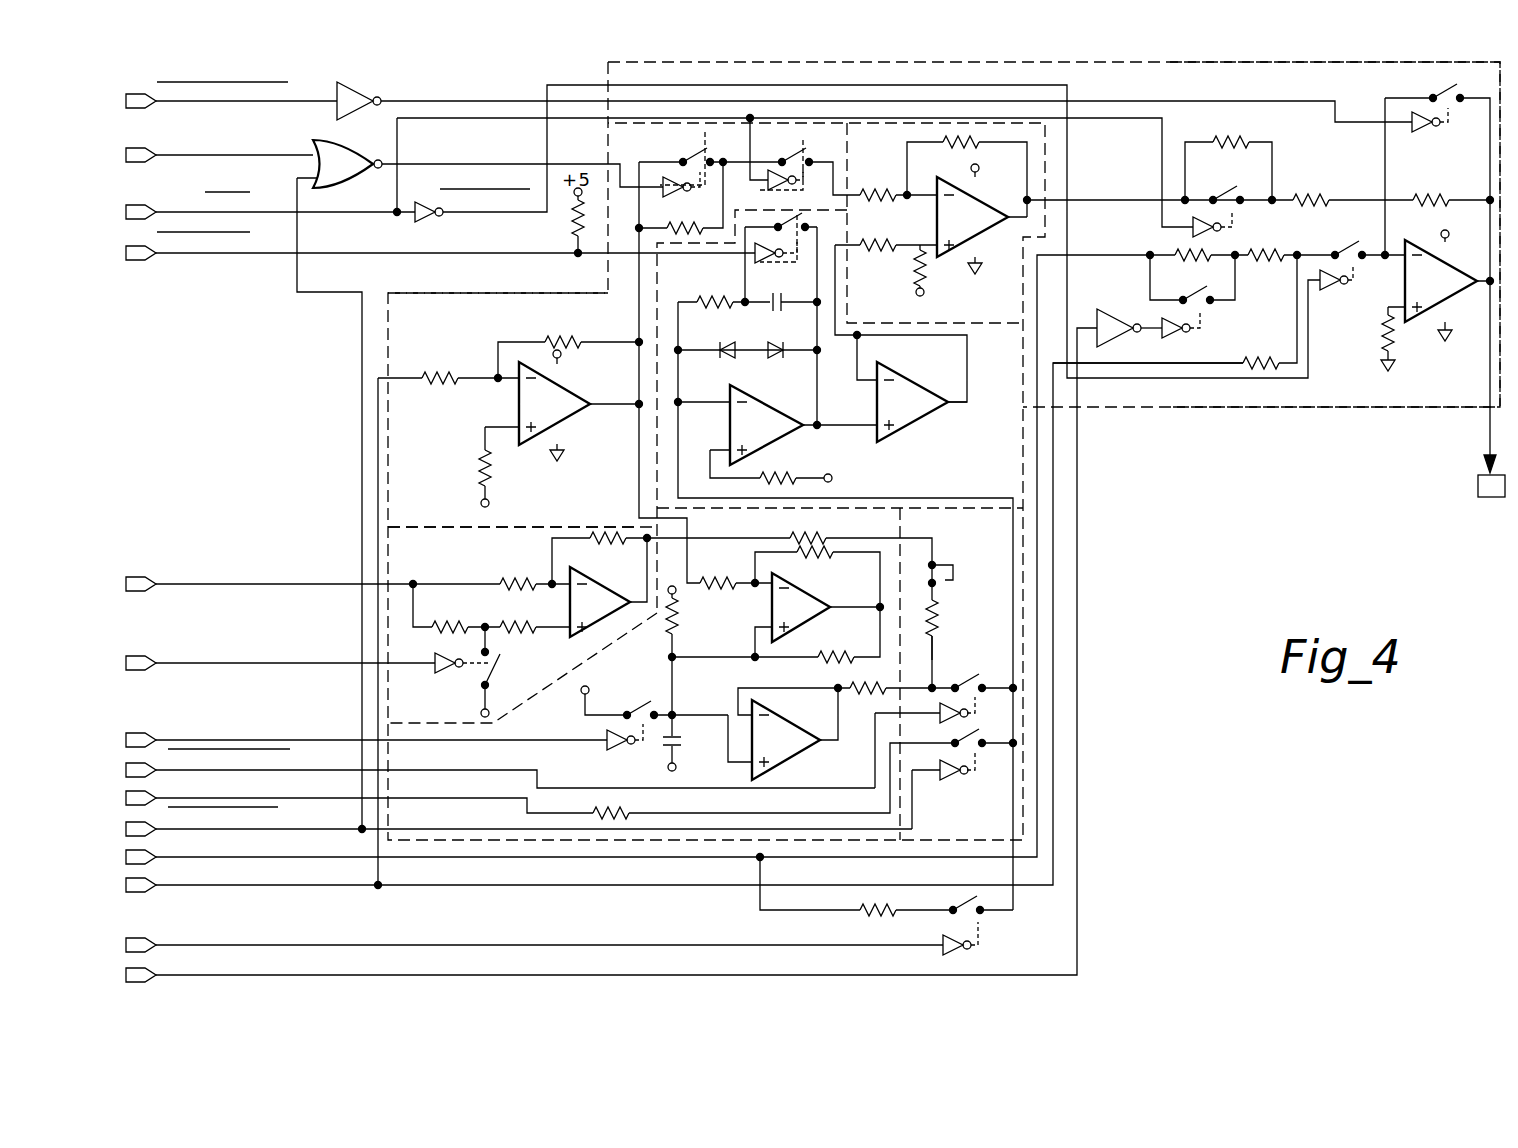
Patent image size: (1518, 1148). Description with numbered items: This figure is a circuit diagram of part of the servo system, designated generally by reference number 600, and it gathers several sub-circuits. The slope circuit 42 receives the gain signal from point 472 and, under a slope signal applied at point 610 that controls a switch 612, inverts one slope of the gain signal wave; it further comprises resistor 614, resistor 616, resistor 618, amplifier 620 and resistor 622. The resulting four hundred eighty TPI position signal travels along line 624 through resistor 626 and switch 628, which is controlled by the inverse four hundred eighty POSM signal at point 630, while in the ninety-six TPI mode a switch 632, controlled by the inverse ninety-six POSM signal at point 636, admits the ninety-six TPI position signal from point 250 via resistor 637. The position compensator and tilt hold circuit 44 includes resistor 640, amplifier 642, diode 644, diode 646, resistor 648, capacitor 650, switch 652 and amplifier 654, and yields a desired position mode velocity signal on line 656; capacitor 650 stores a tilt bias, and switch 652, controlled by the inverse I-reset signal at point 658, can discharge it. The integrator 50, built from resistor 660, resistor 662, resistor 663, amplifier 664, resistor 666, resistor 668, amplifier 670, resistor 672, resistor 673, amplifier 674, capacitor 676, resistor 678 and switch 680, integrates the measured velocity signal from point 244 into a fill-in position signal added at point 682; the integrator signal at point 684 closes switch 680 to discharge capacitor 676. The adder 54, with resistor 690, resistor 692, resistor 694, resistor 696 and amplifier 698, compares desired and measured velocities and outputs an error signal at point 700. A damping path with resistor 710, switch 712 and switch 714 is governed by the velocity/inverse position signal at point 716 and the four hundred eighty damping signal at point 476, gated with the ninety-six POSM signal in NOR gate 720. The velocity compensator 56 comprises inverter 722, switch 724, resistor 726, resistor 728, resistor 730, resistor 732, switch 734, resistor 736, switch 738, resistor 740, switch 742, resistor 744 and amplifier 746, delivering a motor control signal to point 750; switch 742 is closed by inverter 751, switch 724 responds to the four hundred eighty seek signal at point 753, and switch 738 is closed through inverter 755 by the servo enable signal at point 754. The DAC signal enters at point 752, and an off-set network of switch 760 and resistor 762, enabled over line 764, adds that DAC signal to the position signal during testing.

The circuit diagram portion 600 is at (1206, 503).
The adder 54 is at (935, 223).
The position compensator and tilt hold circuit 44 is at (840, 411).
The slope circuit 42 is at (522, 625).
The integrator 50 is at (514, 410).
The velocity compensator 56 is at (1335, 234).
The servo enable point 754 is at (125, 100).
The inverter 755 is at (350, 95).
The four hundred eighty damping signal point 476 is at (125, 153).
The NOR gate 720 is at (360, 140).
The velocity/inverse position signal point 716 is at (125, 209).
The inverter 751 is at (428, 226).
The inverse I-reset signal point 658 is at (125, 251).
The switch 712 is at (678, 160).
The resistor 710 is at (674, 228).
The switch 714 is at (790, 186).
The resistor 690 is at (885, 188).
The resistor 692 is at (885, 240).
The resistor 696 is at (958, 150).
The amplifier 698 is at (978, 212).
The resistor 694 is at (925, 272).
The error signal point 700 is at (1028, 200).
The switch 652 is at (770, 258).
The resistor 648 is at (705, 298).
The capacitor 650 is at (772, 306).
The diode 644 is at (722, 348).
The diode 646 is at (778, 356).
The amplifier 642 is at (777, 425).
The resistor 640 is at (798, 476).
The amplifier 654 is at (911, 387).
The desired position mode velocity signal line 656 is at (965, 375).
The resistor 662 is at (455, 375).
The resistor 663 is at (585, 330).
The amplifier 664 is at (579, 405).
The resistor 660 is at (484, 470).
The gain signal point 472 is at (125, 581).
The resistor 618 is at (515, 580).
The resistor 614 is at (450, 624).
The resistor 616 is at (530, 625).
The amplifier 620 is at (572, 638).
The resistor 622 is at (602, 534).
The line 624 is at (812, 538).
The slope signal point 610 is at (125, 660).
The switch 612 is at (450, 670).
The resistor 666 is at (712, 582).
The resistor 678 is at (676, 630).
The amplifier 670 is at (812, 597).
The resistor 668 is at (830, 556).
The resistor 672 is at (854, 654).
The switch 680 is at (612, 750).
The integrator signal point 684 is at (125, 737).
The capacitor 676 is at (678, 740).
The amplifier 674 is at (785, 733).
The resistor 673 is at (862, 682).
The resistor 626 is at (936, 610).
The summing point 682 is at (935, 648).
The switch 628 is at (940, 690).
The inverse four hundred eighty POSM signal point 630 is at (125, 768).
The ninety-six TPI position signal point 250 is at (125, 796).
The resistor 637 is at (626, 808).
The switch 632 is at (952, 776).
The inverse ninety-six POSM signal point 636 is at (125, 827).
The DAC signal point 752 is at (125, 855).
The measured velocity signal point 244 is at (125, 883).
The resistor 762 is at (872, 916).
The off-set enable line 764 is at (125, 942).
The switch 760 is at (955, 952).
The four hundred eighty seek signal point 753 is at (125, 977).
The resistor 736 is at (1232, 140).
The switch 734 is at (1190, 230).
The resistor 732 is at (1325, 198).
The resistor 740 is at (1440, 198).
The switch 738 is at (1426, 130).
The motor control signal point 750 is at (1477, 483).
The inverter 722 is at (1105, 312).
The switch 724 is at (1165, 336).
The resistor 728 is at (1200, 264).
The resistor 730 is at (1282, 252).
The resistor 726 is at (1272, 362).
The switch 742 is at (1330, 292).
The amplifier 746 is at (1449, 277).
The resistor 744 is at (1392, 346).